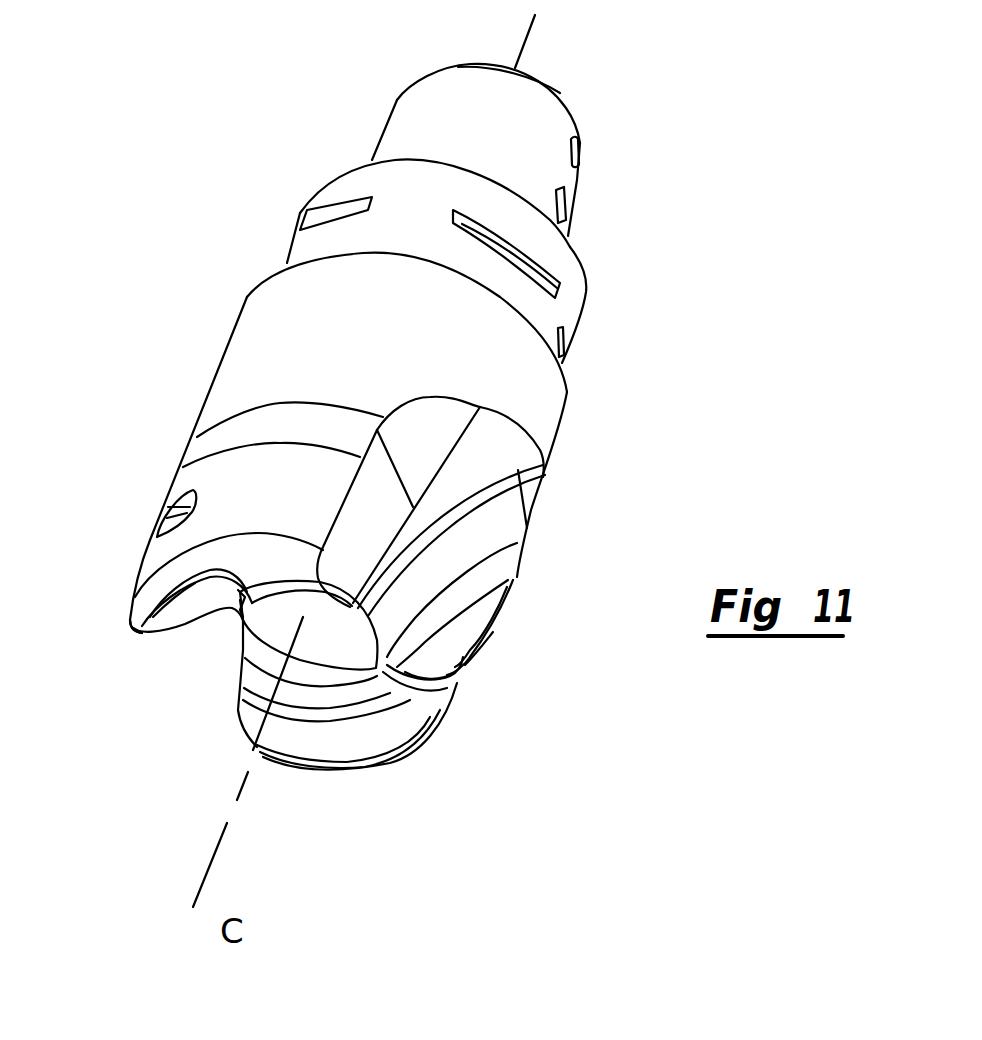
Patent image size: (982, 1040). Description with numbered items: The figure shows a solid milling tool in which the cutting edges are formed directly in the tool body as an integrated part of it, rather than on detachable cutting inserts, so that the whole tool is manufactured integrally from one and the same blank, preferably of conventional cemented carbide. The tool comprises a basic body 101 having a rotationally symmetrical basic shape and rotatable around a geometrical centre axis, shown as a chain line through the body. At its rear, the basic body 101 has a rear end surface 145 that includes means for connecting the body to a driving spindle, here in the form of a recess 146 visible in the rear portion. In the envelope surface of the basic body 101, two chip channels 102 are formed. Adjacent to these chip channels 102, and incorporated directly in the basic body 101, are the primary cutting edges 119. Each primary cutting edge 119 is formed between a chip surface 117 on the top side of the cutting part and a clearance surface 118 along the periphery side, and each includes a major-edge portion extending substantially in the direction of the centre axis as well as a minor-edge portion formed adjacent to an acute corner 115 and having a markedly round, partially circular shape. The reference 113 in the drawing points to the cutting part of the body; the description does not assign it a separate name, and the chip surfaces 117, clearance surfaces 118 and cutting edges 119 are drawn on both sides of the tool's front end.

The basic body 101 is at (228, 329).
The chip channel 102 is at (460, 427).
The finger 113 is at (542, 606).
The acute corner 115 is at (470, 742).
The chip surface 117 is at (147, 641).
The clearance surface 118 is at (137, 625).
The primary cutting edge 119 is at (137, 632).
The rear end surface 145 is at (560, 93).
The recess 146 is at (580, 157).